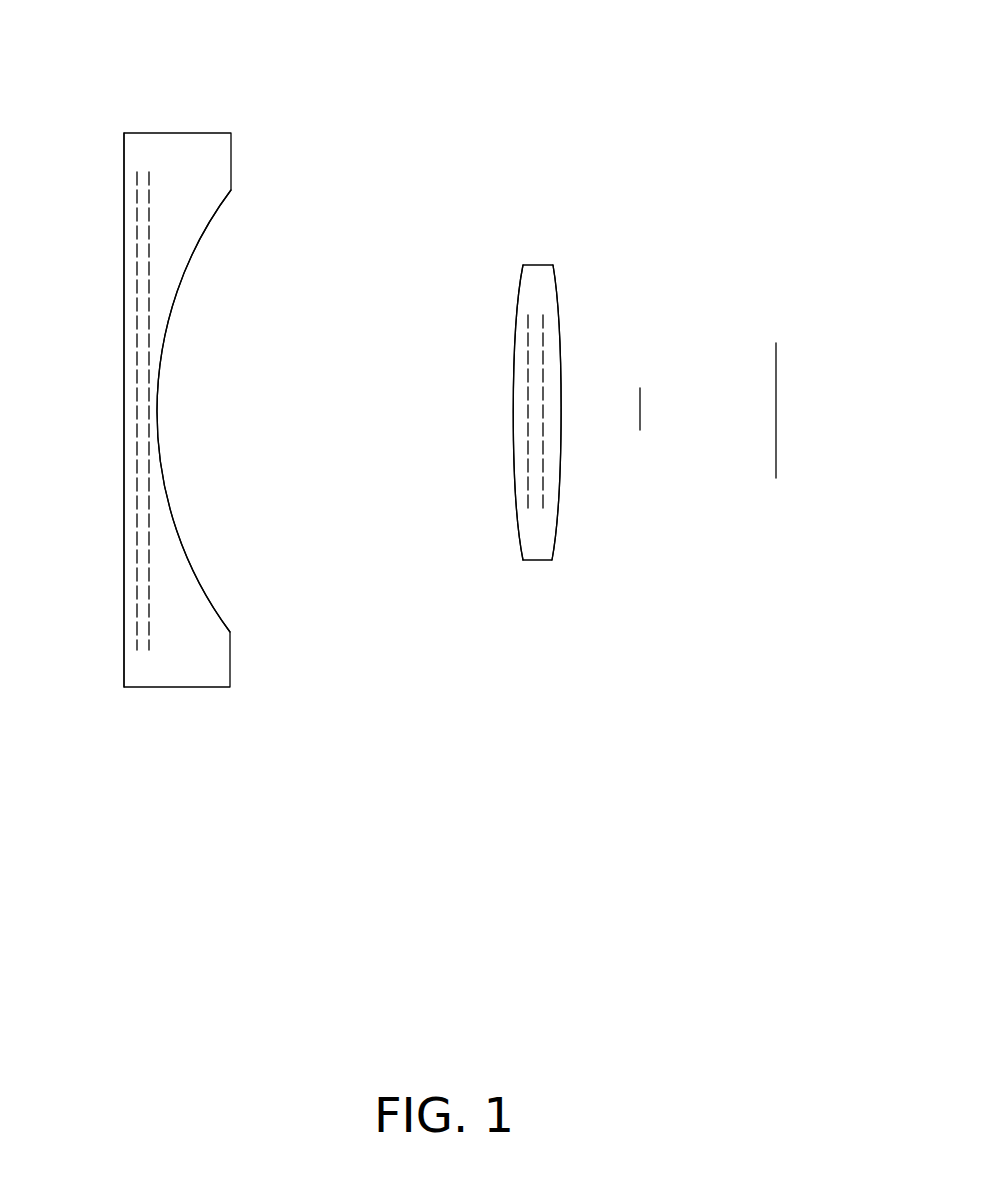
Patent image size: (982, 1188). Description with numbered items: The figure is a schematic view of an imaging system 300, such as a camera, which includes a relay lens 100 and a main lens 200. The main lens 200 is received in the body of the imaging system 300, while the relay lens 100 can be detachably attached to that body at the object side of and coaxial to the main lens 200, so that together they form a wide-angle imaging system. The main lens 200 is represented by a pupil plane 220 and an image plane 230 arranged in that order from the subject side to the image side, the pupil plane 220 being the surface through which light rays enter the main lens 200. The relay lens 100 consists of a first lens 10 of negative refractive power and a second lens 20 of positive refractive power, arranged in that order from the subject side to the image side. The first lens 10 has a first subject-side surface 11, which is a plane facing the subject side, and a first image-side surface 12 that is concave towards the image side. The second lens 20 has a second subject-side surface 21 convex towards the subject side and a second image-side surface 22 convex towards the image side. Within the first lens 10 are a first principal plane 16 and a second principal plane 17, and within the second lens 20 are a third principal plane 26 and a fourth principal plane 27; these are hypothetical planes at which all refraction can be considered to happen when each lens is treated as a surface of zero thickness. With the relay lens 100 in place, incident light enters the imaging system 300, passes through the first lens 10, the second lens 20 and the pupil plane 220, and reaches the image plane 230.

The imaging system 300 is at (484, 43).
The relay lens 100 is at (522, 731).
The first lens 10 is at (196, 402).
The first subject-side surface 11 is at (125, 242).
The first image-side surface 12 is at (200, 238).
The first principal plane 16 is at (137, 200).
The second principal plane 17 is at (150, 198).
The second lens 20 is at (525, 498).
The second subject-side surface 21 is at (517, 338).
The second image-side surface 22 is at (560, 318).
The third principal plane 26 is at (528, 388).
The fourth principal plane 27 is at (545, 365).
The main lens 200 is at (805, 553).
The pupil plane 220 is at (640, 425).
The image plane 230 is at (776, 453).